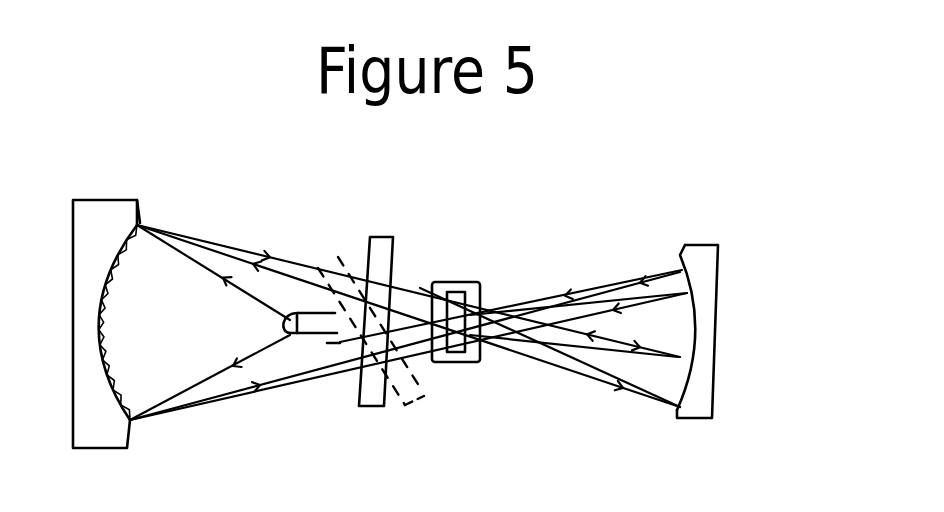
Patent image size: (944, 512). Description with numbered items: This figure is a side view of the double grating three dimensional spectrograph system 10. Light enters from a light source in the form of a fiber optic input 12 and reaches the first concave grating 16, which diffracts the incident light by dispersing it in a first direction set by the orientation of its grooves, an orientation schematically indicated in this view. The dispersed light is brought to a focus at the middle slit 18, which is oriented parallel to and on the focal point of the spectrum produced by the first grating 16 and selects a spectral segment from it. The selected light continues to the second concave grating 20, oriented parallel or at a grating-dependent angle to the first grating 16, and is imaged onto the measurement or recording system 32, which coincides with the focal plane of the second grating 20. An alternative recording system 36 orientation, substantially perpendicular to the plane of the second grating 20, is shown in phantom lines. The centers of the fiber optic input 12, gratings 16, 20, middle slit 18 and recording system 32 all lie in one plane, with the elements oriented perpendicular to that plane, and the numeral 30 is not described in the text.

The double grating three dimensional spectrograph system 10 is at (529, 234).
The fiber optic input 12 is at (315, 308).
The first concave grating 16 is at (93, 200).
The middle slit 18 is at (457, 365).
The second concave grating 20 is at (713, 312).
The beam splitter 30 is at (337, 253).
The measurement or recording system 32 is at (380, 242).
The recording system 36 is at (330, 343).